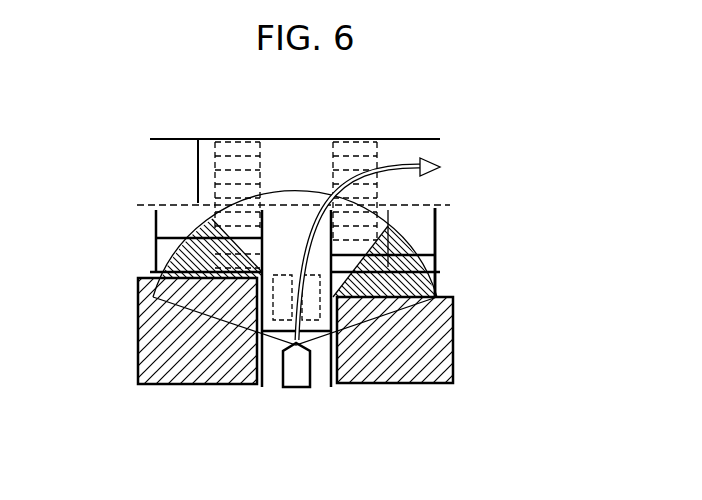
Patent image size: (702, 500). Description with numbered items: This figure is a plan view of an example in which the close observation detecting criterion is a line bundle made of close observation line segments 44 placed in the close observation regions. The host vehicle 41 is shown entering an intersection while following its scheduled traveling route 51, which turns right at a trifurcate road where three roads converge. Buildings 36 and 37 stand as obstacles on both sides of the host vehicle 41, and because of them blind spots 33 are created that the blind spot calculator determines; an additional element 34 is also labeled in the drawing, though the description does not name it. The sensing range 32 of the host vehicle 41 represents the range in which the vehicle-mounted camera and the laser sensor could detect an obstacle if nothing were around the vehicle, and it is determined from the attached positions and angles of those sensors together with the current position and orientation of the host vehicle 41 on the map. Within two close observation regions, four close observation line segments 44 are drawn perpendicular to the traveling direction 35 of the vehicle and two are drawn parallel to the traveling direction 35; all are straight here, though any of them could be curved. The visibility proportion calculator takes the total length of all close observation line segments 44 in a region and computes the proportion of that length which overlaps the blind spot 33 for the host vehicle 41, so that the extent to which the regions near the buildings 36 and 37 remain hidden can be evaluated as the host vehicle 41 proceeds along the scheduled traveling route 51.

The sensing range 32 is at (301, 193).
The blind spot 33 is at (168, 272).
The intake passage 34 is at (160, 171).
The traveling direction 35 is at (438, 237).
The building 36 is at (455, 342).
The building 37 is at (137, 337).
The host vehicle 41 is at (305, 389).
The close observation line segment 44 is at (155, 213).
The scheduled traveling route 51 is at (406, 163).